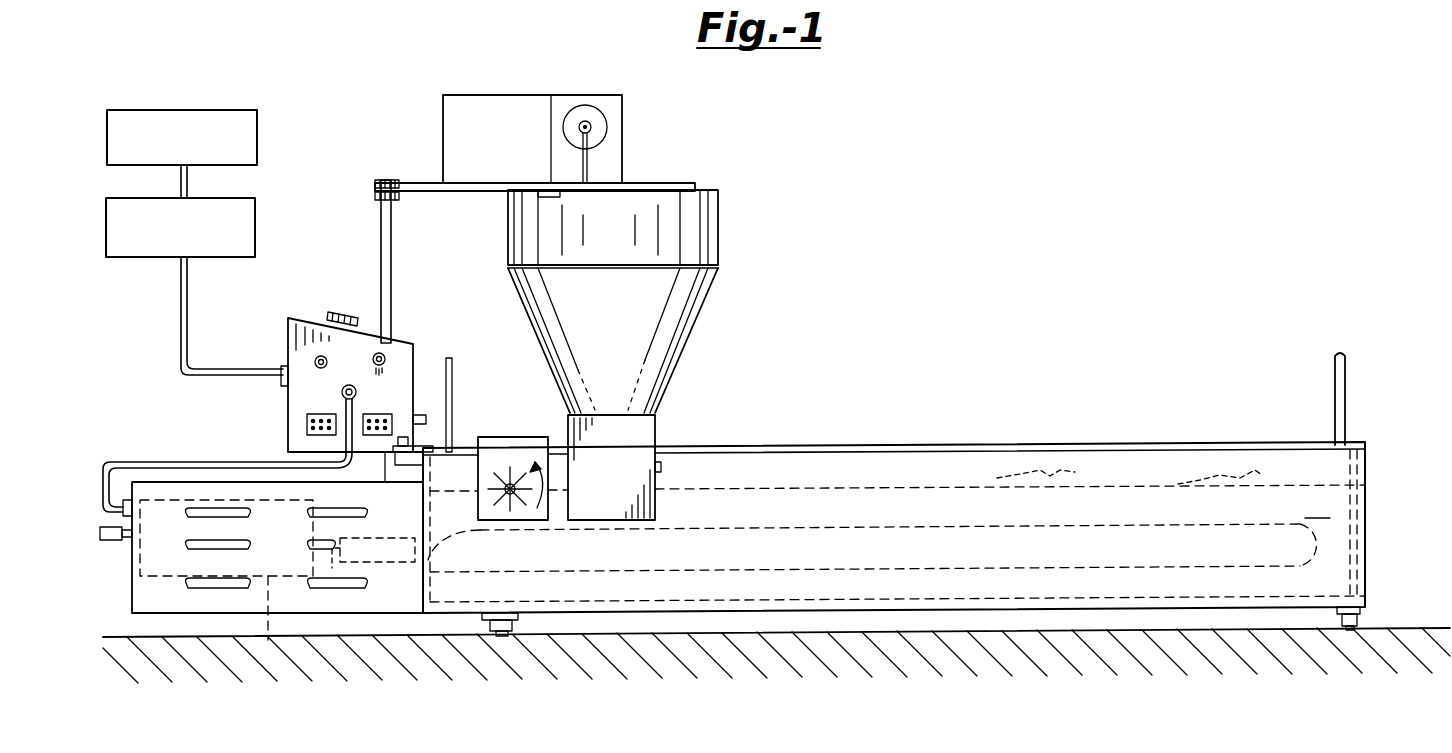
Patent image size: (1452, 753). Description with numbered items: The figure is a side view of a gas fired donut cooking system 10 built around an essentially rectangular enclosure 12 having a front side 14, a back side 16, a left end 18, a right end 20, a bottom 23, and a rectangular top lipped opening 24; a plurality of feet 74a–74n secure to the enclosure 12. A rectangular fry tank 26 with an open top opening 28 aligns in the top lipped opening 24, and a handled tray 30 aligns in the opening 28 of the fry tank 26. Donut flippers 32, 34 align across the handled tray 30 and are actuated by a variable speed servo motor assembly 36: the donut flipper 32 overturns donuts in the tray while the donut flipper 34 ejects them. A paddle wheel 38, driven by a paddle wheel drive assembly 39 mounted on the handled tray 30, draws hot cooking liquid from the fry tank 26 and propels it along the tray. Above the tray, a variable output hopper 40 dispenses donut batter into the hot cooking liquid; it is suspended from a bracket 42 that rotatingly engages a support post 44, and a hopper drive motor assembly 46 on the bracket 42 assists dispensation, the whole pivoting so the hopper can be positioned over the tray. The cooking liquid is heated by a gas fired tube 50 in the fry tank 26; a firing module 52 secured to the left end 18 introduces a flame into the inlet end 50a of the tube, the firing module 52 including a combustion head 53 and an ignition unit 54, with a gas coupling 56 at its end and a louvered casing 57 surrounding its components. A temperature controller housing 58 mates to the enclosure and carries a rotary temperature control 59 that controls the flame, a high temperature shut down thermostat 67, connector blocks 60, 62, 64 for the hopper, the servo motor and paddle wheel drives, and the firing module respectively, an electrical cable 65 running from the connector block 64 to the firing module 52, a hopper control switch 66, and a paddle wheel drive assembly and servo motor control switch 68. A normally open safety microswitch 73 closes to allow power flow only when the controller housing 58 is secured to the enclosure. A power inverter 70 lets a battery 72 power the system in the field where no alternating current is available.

The gas fired donut cooking system 10 is at (1060, 150).
The enclosure 12 is at (1368, 495).
The front side 14 is at (1318, 507).
The back side 16 is at (1352, 568).
The left end 18 is at (420, 583).
The right end 20 is at (1362, 595).
The bottom 23 is at (893, 612).
The rectangular top lipped opening 24 is at (1043, 444).
The rectangular fry tank 26 is at (1352, 525).
The open top opening 28 is at (1094, 444).
The handled tray 30 is at (1178, 484).
The donut flipper 32 is at (997, 478).
The donut flipper 34 is at (1260, 472).
The variable speed servo motor assembly 36 is at (655, 437).
The paddle wheel 38 is at (510, 465).
The paddle wheel drive assembly 39 is at (485, 437).
The variable output hopper 40 is at (720, 233).
The bracket 42 is at (460, 192).
The support post 44 is at (393, 262).
The hopper drive motor assembly 46 is at (540, 95).
The gas fired tube 50 is at (873, 548).
The inlet end 50a is at (477, 547).
The firing module 52 is at (312, 588).
The combustion head 53 is at (386, 538).
The ignition unit 54 is at (268, 640).
The gas coupling 56 is at (105, 540).
The louvered casing 57 is at (182, 602).
The temperature controller housing 58 is at (288, 325).
The rotary temperature control 59 is at (345, 318).
The connector block 60 is at (307, 418).
The connector block 62 is at (370, 418).
The connector block 64 is at (349, 385).
The electrical cable 65 is at (150, 465).
The hopper control switch 66 is at (316, 364).
The high temperature shut down thermostat 67 is at (455, 385).
The paddle wheel drive assembly and servo motor control switch 68 is at (384, 358).
The power inverter 70 is at (255, 225).
The battery 72 is at (257, 135).
The safety microswitch 73 is at (425, 420).
The foot 74a is at (490, 630).
The foot 74n is at (1345, 630).